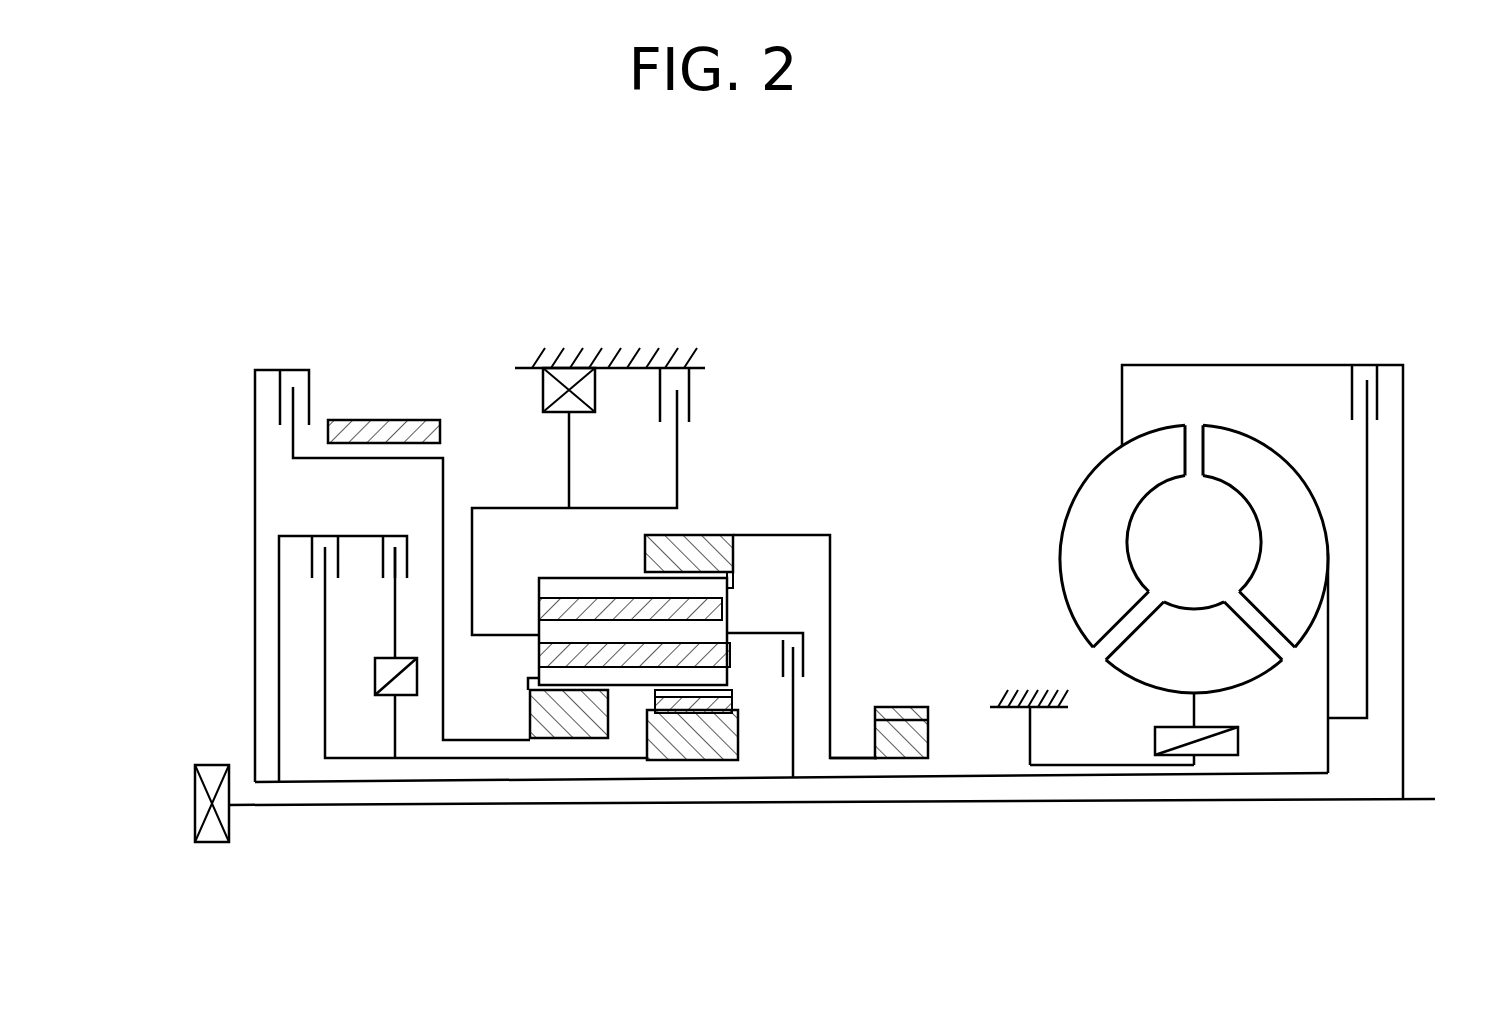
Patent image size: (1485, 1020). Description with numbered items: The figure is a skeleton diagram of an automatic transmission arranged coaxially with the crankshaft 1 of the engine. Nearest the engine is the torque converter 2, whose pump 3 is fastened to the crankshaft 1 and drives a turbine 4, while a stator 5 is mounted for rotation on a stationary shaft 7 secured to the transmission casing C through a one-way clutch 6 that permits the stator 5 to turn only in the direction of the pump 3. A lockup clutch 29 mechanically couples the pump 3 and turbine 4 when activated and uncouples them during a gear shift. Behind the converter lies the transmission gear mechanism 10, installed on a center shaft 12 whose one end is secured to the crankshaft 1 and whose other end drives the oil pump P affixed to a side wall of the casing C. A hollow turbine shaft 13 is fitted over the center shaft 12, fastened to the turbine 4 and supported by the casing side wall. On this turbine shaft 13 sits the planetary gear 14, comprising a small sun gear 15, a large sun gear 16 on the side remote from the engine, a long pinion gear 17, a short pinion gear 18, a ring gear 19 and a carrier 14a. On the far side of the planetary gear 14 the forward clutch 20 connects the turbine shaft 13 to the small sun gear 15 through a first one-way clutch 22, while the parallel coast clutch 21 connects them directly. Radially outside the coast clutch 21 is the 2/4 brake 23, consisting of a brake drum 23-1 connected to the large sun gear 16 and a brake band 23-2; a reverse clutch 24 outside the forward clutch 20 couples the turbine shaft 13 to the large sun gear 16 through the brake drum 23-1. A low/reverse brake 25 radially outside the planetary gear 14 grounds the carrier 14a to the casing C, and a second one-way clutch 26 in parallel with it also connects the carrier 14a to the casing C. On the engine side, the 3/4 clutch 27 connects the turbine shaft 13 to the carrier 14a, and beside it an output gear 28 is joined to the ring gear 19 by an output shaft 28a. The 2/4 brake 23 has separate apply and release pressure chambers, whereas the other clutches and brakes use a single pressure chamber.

The crankshaft 1 is at (1432, 800).
The torque converter 2 is at (1121, 543).
The pump 3 is at (1080, 487).
The turbine 4 is at (1290, 463).
The stator 5 is at (1130, 690).
The one-way clutch 6 is at (1238, 740).
The stationary shaft 7 is at (1083, 766).
The transmission gear mechanism 10 is at (478, 332).
The center shaft 12 is at (1200, 801).
The turbine shaft 13 is at (583, 781).
The planetary gear 14 is at (722, 455).
The carrier 14a is at (605, 506).
The small sun gear 15 is at (700, 745).
The large sun gear 16 is at (548, 725).
The long pinion gear 17 is at (544, 578).
The short pinion gear 18 is at (733, 677).
The ring gear 19 is at (731, 532).
The forward clutch 20 is at (312, 568).
The coast clutch 21 is at (404, 535).
The first one-way clutch 22 is at (378, 696).
The 2/4 brake 23 is at (376, 506).
The brake drum 23-1 is at (333, 458).
The brake band 23-2 is at (377, 418).
The reverse clutch 24 is at (278, 397).
The low/reverse brake 25 is at (721, 373).
The second one-way clutch 26 is at (543, 392).
The 3/4 clutch 27 is at (803, 665).
The output gear 28 is at (928, 745).
The output shaft 28a is at (857, 760).
The lockup clutch 29 is at (1385, 395).
The transmission casing C is at (588, 355).
The oil pump P is at (215, 842).